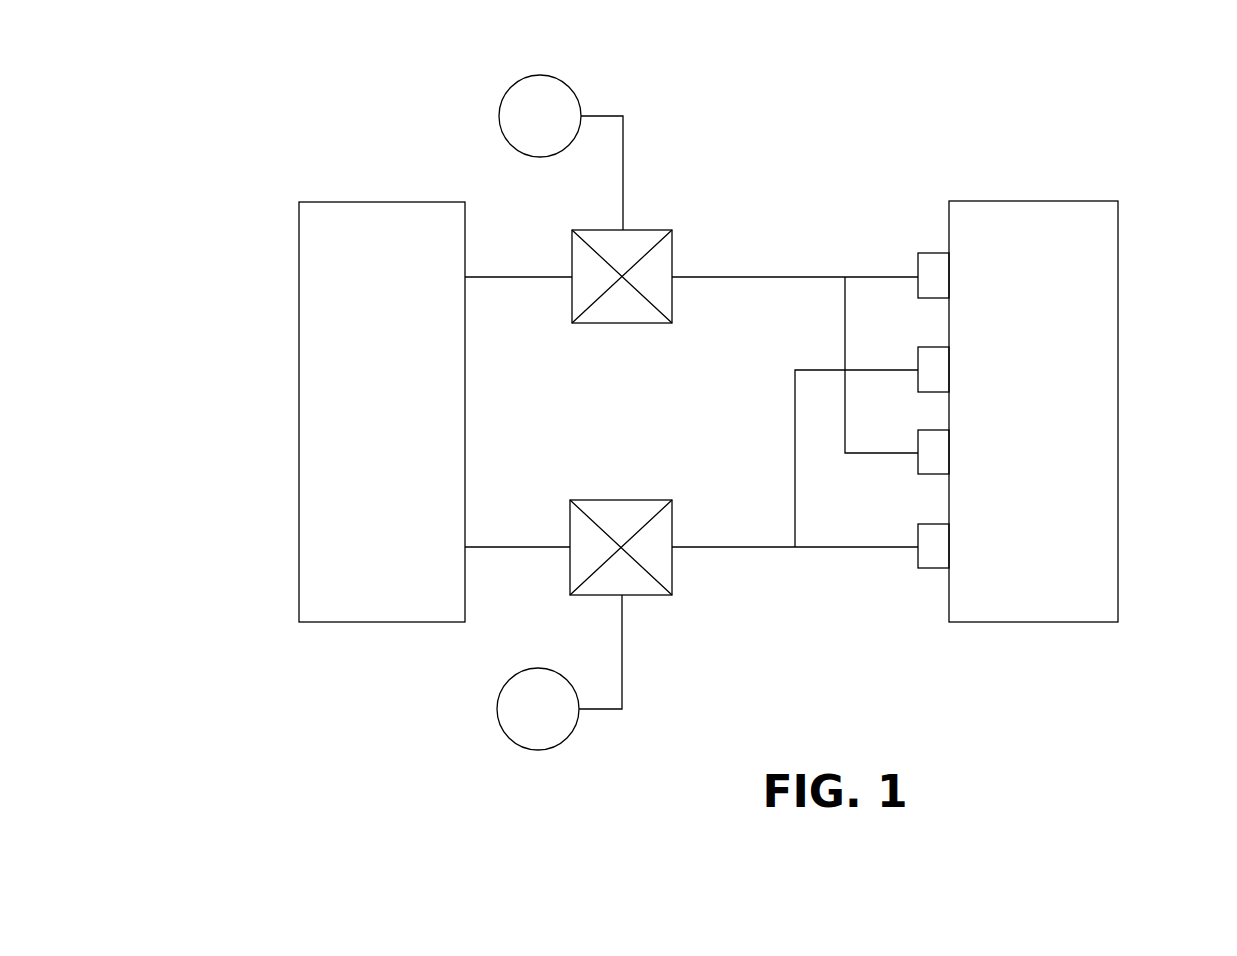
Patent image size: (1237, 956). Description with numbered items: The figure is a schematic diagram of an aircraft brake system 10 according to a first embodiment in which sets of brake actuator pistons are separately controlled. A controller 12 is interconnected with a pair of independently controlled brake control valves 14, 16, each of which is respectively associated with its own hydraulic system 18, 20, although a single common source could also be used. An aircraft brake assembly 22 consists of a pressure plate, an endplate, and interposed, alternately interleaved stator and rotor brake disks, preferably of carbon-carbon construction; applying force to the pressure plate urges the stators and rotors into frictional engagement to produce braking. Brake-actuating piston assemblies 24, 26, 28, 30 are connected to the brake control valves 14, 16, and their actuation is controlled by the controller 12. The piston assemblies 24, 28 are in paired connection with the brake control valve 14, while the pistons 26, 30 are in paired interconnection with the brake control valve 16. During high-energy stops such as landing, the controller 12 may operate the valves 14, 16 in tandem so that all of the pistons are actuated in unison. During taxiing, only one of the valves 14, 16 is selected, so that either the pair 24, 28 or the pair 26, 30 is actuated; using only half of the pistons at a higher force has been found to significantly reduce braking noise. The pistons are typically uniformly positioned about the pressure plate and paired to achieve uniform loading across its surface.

The aircraft brake system 10 is at (885, 148).
The controller 12 is at (299, 270).
The brake control valve 14 is at (672, 245).
The brake control valve 16 is at (672, 513).
The hydraulic system 18 is at (506, 94).
The hydraulic system 20 is at (537, 750).
The aircraft brake assembly 22 is at (1119, 253).
The brake-actuating piston assembly 24 is at (936, 253).
The brake-actuating piston assembly 26 is at (933, 392).
The brake-actuating piston assembly 28 is at (936, 474).
The brake-actuating piston assembly 30 is at (918, 565).